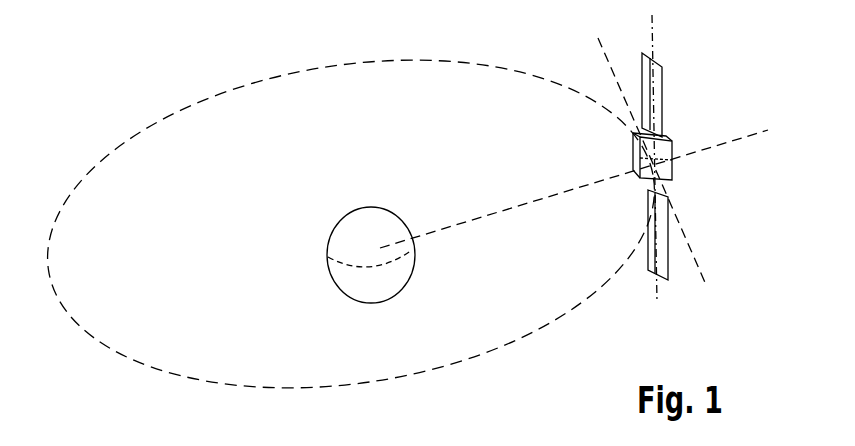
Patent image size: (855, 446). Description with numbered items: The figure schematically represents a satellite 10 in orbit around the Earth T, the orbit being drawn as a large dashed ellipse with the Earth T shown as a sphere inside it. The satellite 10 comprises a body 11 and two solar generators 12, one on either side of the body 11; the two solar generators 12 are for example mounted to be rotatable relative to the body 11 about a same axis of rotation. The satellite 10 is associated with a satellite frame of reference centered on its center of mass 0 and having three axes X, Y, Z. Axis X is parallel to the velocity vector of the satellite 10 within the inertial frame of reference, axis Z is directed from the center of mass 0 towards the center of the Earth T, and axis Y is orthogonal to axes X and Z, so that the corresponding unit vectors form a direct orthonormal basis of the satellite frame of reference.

The satellite 10 is at (696, 183).
The body 11 is at (672, 140).
The solar generators 12 is at (664, 73).
The center of mass 0 is at (672, 165).
The Earth T is at (356, 229).
The axis X is at (652, 151).
The axis Y is at (647, 173).
The axis Z is at (574, 189).